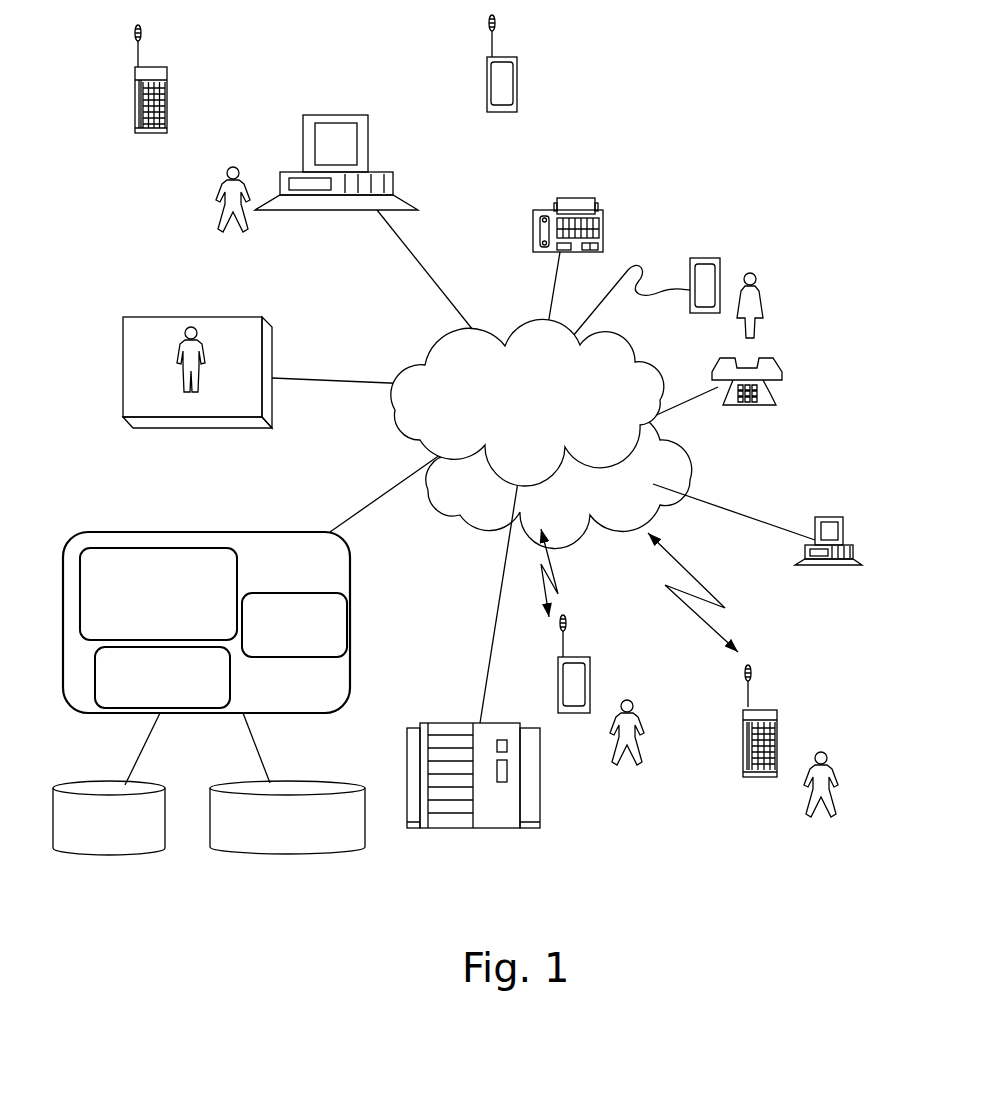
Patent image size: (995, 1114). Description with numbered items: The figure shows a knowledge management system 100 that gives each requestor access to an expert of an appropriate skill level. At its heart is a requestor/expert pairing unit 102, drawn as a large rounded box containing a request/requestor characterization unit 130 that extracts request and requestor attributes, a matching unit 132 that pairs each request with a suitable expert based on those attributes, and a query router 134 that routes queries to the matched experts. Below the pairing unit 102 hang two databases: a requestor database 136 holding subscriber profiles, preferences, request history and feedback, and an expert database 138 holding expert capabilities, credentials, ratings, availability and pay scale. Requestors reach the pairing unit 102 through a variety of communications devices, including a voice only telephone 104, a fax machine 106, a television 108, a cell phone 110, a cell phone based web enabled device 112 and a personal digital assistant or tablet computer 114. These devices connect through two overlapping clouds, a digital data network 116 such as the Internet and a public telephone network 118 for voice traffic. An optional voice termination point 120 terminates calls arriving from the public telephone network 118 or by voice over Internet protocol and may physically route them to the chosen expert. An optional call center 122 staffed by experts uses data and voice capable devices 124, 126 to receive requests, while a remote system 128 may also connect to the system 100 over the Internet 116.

The knowledge management system 100 is at (183, 963).
The requestor/expert pairing unit 102 is at (223, 597).
The voice only telephone 104 is at (778, 358).
The fax machine 106 is at (533, 210).
The television 108 is at (143, 317).
The cell phone 110 is at (777, 737).
The cell phone based web enabled device 112 is at (590, 684).
The personal digital assistant or tablet computer 114 is at (722, 265).
The data network 116 is at (457, 348).
The public telephone network 118 is at (697, 466).
The voice termination point 120 is at (458, 723).
The call center 122 is at (303, 152).
The data and voice capable device 124 is at (167, 94).
The data and voice capable device 126 is at (514, 82).
The remote system 128 is at (847, 517).
The request/requestor characterization unit 130 is at (118, 548).
The matching unit 132 is at (96, 707).
The query router 134 is at (349, 608).
The requestor database 136 is at (345, 787).
The expert database 138 is at (107, 848).